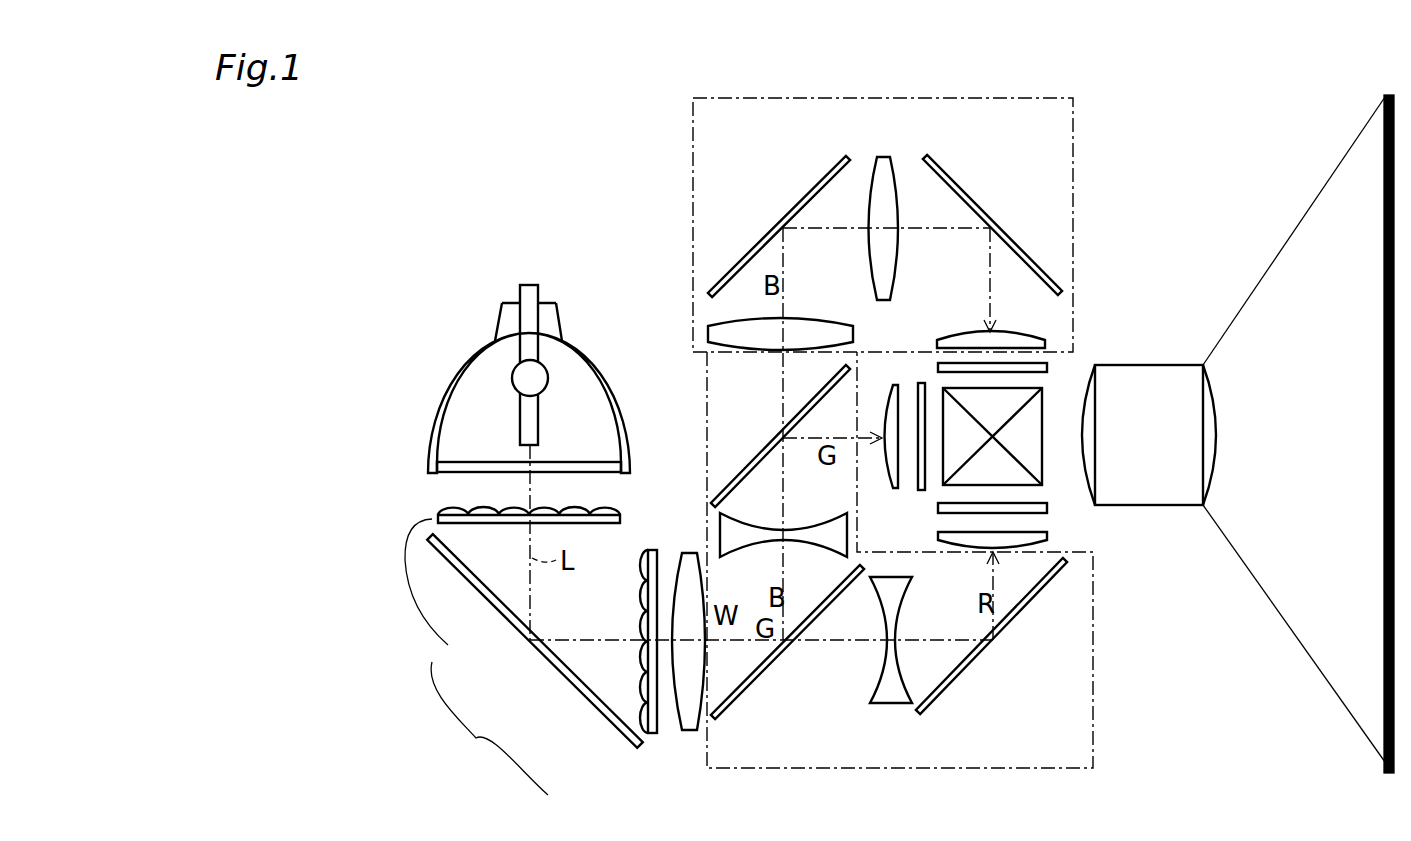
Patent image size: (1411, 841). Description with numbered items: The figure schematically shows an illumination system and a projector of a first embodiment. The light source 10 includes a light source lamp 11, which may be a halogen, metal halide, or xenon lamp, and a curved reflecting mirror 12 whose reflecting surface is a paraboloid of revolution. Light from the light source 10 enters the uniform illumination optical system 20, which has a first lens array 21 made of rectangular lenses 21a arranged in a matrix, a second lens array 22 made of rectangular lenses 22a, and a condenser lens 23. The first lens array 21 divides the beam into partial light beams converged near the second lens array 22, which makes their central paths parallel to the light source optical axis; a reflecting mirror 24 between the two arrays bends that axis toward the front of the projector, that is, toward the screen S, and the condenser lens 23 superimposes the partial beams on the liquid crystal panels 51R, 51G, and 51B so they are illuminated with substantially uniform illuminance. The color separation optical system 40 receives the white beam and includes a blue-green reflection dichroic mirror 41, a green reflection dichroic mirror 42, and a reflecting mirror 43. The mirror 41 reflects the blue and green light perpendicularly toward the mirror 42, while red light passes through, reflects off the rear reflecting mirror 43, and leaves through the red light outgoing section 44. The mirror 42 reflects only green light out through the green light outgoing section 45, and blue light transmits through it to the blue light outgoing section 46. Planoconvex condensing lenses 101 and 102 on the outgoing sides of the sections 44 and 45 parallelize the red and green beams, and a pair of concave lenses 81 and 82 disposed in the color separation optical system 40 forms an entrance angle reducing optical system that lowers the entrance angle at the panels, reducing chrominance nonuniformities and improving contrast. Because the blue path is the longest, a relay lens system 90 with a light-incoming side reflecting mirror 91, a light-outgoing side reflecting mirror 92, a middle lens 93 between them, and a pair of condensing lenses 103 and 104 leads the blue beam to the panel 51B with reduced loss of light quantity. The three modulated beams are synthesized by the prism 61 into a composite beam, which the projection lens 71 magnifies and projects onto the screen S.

The light source 10 is at (495, 333).
The light source lamp 11 is at (552, 377).
The curved reflecting mirror 12 is at (560, 358).
The uniform illumination optical system 20 is at (477, 768).
The first lens array 21 is at (438, 596).
The rectangular lens 21a is at (612, 512).
The second lens array 22 is at (655, 735).
The rectangular lens 22a is at (645, 563).
The condenser lens 23 is at (692, 730).
The reflecting mirror 24 is at (547, 652).
The color separation optical system 40 is at (1093, 692).
The blue-green reflection dichroic mirror 41 is at (797, 645).
The green reflection dichroic mirror 42 is at (760, 466).
The reflecting mirror 43 is at (997, 640).
The red light outgoing section 44 is at (990, 553).
The green light outgoing section 45 is at (883, 440).
The blue light outgoing section 46 is at (782, 357).
The liquid crystal panel 51B is at (1040, 371).
The liquid crystal panel 51G is at (921, 480).
The liquid crystal panel 51R is at (1037, 512).
The prism 61 is at (1037, 493).
The projection lens 71 is at (1165, 365).
The concave lens 81 is at (893, 703).
The concave lens 82 is at (810, 540).
The relay lens system 90 is at (693, 152).
The light-incoming side reflecting mirror 91 is at (820, 187).
The light-outgoing side reflecting mirror 92 is at (958, 187).
The middle lens 93 is at (883, 157).
The condensing lens 101 is at (1037, 535).
The condensing lens 102 is at (892, 395).
The condensing lens 103 is at (820, 318).
The condensing lens 104 is at (1030, 314).
The screen S is at (1383, 133).